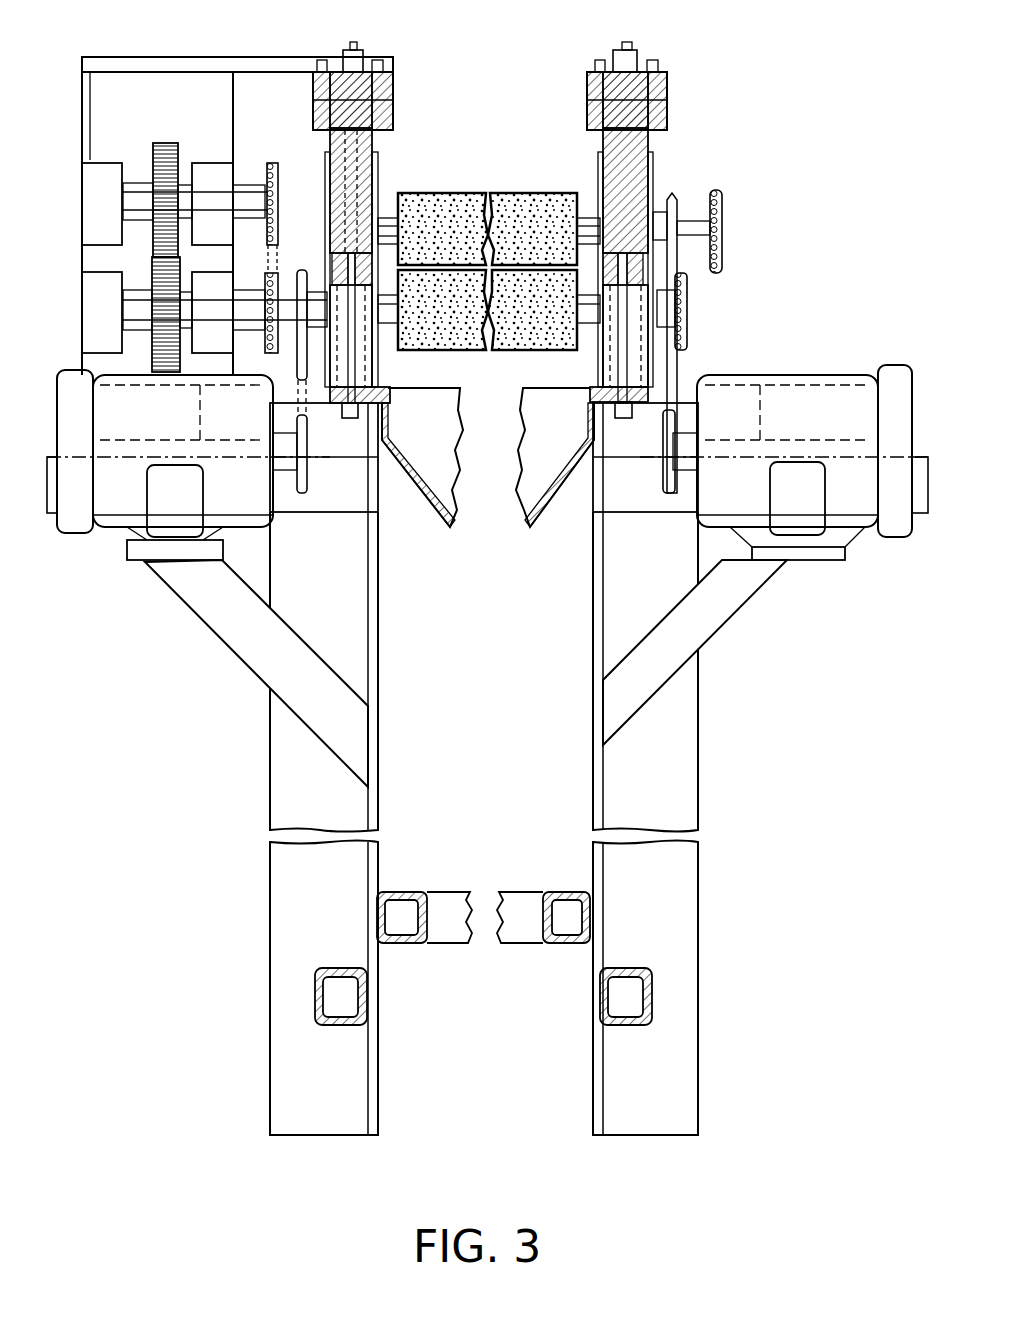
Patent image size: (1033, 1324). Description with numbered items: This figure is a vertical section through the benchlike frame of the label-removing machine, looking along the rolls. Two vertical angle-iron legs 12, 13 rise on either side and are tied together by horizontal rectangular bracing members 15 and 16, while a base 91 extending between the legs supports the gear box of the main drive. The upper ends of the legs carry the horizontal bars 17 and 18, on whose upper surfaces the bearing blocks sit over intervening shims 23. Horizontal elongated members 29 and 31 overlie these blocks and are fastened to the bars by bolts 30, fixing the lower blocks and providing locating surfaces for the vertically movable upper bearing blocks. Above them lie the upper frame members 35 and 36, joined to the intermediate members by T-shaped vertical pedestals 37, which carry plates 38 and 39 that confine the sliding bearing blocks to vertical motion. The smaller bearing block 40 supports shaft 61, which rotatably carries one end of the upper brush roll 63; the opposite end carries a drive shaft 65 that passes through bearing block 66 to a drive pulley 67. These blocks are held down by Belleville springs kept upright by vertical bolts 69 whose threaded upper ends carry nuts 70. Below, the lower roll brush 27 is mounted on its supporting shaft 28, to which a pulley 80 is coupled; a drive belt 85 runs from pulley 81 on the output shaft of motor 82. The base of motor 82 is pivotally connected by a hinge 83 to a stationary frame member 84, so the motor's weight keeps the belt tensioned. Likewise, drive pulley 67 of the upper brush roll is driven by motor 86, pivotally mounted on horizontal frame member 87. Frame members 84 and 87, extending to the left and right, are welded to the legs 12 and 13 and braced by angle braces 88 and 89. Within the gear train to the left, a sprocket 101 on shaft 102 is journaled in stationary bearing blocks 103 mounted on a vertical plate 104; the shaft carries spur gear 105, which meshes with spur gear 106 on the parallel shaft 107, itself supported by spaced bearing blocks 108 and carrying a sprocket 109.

The leg 12 is at (275, 808).
The leg 13 is at (672, 790).
The horizontal rectangular bracing member 15 is at (600, 1022).
The horizontal rectangular bracing member 16 is at (508, 942).
The horizontal elongated support bar 17 is at (390, 405).
The horizontal bar 18 is at (640, 392).
The shim 23 is at (363, 377).
The roll brush 27 is at (462, 345).
The supporting shaft 28 is at (387, 310).
The horizontal elongated member 29 is at (340, 268).
The bolt 30 is at (350, 418).
The horizontal elongated member 31 is at (640, 273).
The upper frame member 35 is at (388, 92).
The upper frame member 36 is at (665, 92).
The vertical pedestal 37 is at (600, 140).
The plate 38 is at (328, 180).
The plate 39 is at (378, 165).
The bearing block 40 is at (335, 215).
The shaft 61 is at (388, 218).
The brush roll 63 is at (458, 200).
The drive shaft 65 is at (593, 222).
The bearing block 66 is at (660, 210).
The drive pulley 67 is at (700, 205).
The vertical bolt 69 is at (355, 42).
The nut 70 is at (343, 60).
The pulley 80 is at (300, 345).
The pulley 81 is at (285, 478).
The motor 82 is at (148, 424).
The hinge 83 is at (108, 533).
The stationary frame member 84 is at (340, 510).
The drive belt 85 is at (313, 340).
The motor 86 is at (838, 412).
The horizontal frame member 87 is at (620, 520).
The angle brace 88 is at (228, 632).
The angle brace 89 is at (720, 632).
The base 91 is at (395, 893).
The sprocket 101 is at (272, 290).
The shaft 102 is at (187, 313).
The stationary bearing block 103 is at (200, 287).
The vertical plate 104 is at (93, 105).
The spur gear 105 is at (163, 310).
The spur gear 106 is at (170, 148).
The shaft 107 is at (187, 193).
The bearing block 108 is at (213, 180).
The sprocket 109 is at (270, 175).